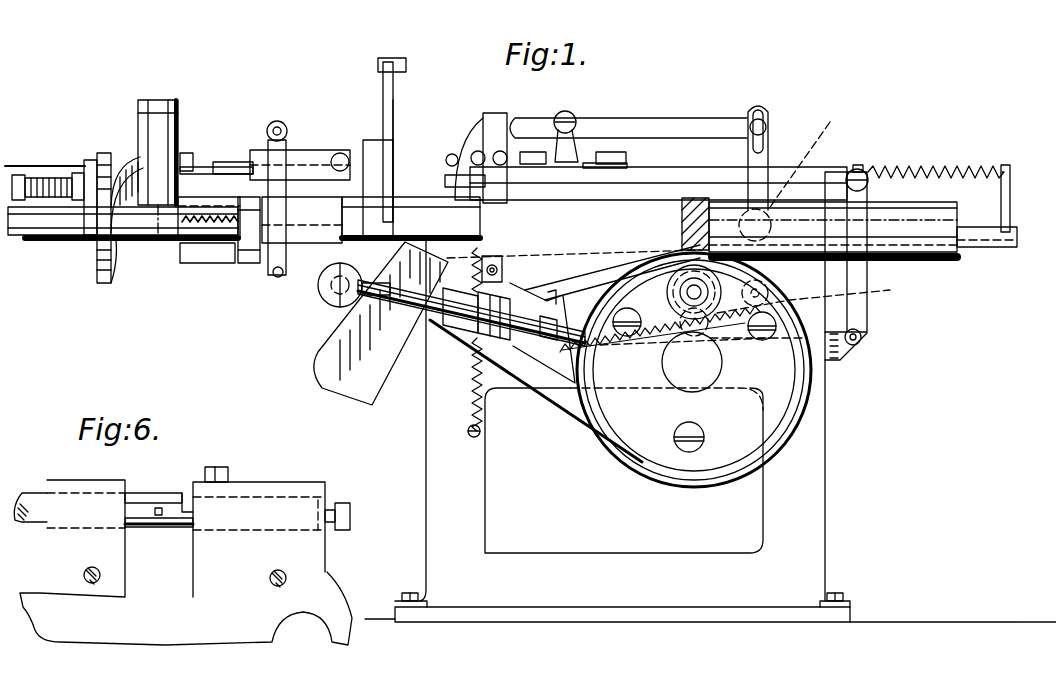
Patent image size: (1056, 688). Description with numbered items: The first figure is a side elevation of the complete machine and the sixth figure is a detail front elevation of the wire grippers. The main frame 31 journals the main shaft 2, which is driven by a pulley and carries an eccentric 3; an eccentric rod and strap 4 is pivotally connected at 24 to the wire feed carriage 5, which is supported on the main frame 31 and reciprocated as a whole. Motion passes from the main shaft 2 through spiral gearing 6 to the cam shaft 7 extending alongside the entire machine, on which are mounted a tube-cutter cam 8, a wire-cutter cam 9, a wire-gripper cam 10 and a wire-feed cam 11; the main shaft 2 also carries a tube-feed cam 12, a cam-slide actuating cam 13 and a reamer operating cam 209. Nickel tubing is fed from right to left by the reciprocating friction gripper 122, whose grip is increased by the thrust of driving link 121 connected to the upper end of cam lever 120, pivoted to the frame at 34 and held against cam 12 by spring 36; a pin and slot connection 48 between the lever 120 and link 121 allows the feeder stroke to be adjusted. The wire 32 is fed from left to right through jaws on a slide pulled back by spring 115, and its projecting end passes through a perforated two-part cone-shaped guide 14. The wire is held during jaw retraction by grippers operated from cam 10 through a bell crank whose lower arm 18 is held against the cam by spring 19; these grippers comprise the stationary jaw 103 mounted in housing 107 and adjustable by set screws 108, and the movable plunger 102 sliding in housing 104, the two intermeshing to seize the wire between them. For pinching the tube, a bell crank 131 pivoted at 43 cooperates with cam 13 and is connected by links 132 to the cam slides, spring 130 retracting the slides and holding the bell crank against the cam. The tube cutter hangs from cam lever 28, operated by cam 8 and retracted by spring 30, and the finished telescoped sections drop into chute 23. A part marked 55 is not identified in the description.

In FIG. 1, the main shaft 2 is at (680, 292).
In FIG. 1, the eccentric 3 is at (773, 395).
In FIG. 1, the eccentric rod and strap 4 is at (584, 308).
In FIG. 1, the wire feed carriage 5 is at (305, 270).
In FIG. 1, the spiral gearing 6 is at (700, 200).
In FIG. 1, the cam shaft 7 is at (32, 238).
In FIG. 1, the tube-cutter cam 8 is at (538, 256).
In FIG. 1, the wire-cutter cam 9 is at (390, 212).
In FIG. 1, the wire-gripper cam 10 is at (240, 262).
In FIG. 1, the wire-feed cam 11 is at (105, 284).
In FIG. 1, the tube-feed cam 12 is at (760, 263).
In FIG. 1, the cam-slide actuating cam 13 is at (665, 334).
In FIG. 1, the perforated two-part cone-shaped guide 14 is at (400, 165).
In FIG. 1, the lower arm 18 is at (282, 250).
In FIG. 1, the spring 19 is at (276, 280).
In FIG. 1, the chute 23 is at (370, 390).
In FIG. 1, the pivotal connection 24 is at (330, 300).
In FIG. 1, the cam lever 28 is at (490, 128).
In FIG. 1, the spring 30 is at (474, 380).
In FIG. 1, the main frame 31 is at (470, 470).
In FIG. 1, the wire 32 is at (50, 165).
In FIG. 1, the pivot 34 is at (807, 153).
In FIG. 1, the spring 36 is at (620, 352).
In FIG. 1, the pivot 43 is at (860, 344).
In FIG. 1, the pin and slot connection 48 is at (762, 112).
In FIG. 1, the link 55 is at (815, 296).
In FIG. 1, the spring 115 is at (192, 238).
In FIG. 1, the cam lever 120 is at (770, 160).
In FIG. 1, the driving link 121 is at (642, 118).
In FIG. 1, the reciprocating friction gripper 122 is at (573, 137).
In FIG. 1, the spring 130 is at (944, 170).
In FIG. 1, the bell crank 131 is at (857, 317).
In FIG. 1, the links 132 is at (834, 178).
In FIG. 1, the reamer operating cam 209 is at (573, 272).
In FIG. 6, the movable gripper or plunger 102 is at (142, 528).
In FIG. 6, the stationary jaw 103 is at (188, 530).
In FIG. 6, the housing 104 is at (78, 480).
In FIG. 6, the housing 107 is at (296, 482).
In FIG. 6, the set screws 108 is at (225, 470).